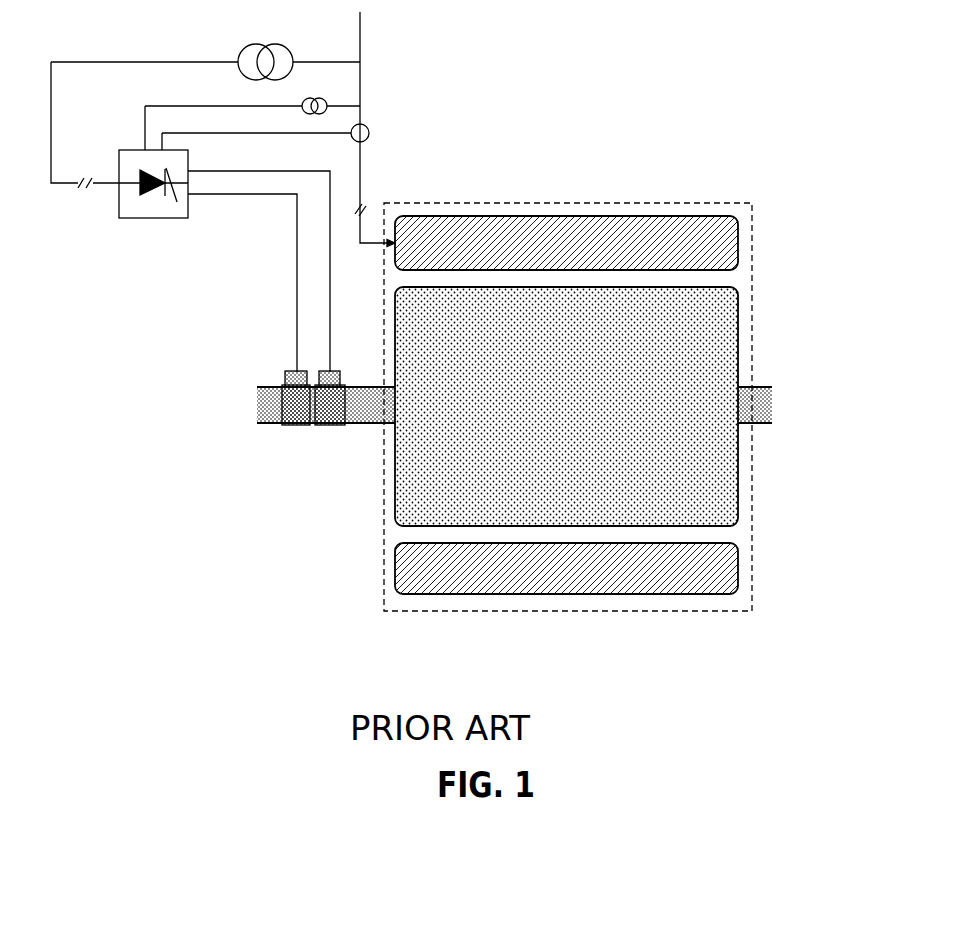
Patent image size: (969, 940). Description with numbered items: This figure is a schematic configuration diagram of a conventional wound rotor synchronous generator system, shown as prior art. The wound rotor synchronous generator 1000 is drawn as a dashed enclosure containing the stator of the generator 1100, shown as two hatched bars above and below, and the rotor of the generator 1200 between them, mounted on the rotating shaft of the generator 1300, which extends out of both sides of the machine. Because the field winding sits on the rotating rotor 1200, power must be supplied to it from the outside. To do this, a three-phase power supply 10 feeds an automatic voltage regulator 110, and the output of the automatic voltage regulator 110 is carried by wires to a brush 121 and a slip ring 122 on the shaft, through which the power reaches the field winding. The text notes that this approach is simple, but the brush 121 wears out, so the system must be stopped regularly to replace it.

The three-phase power supply 10 is at (362, 33).
The automatic voltage regulator 110 is at (127, 203).
The brush 121 is at (293, 425).
The slip ring 122 is at (327, 372).
The wound rotor synchronous generator 1000 is at (563, 202).
The stator of generator 1100 is at (688, 242).
The rotor of generator 1200 is at (718, 460).
The rotating shaft of generator 1300 is at (763, 405).